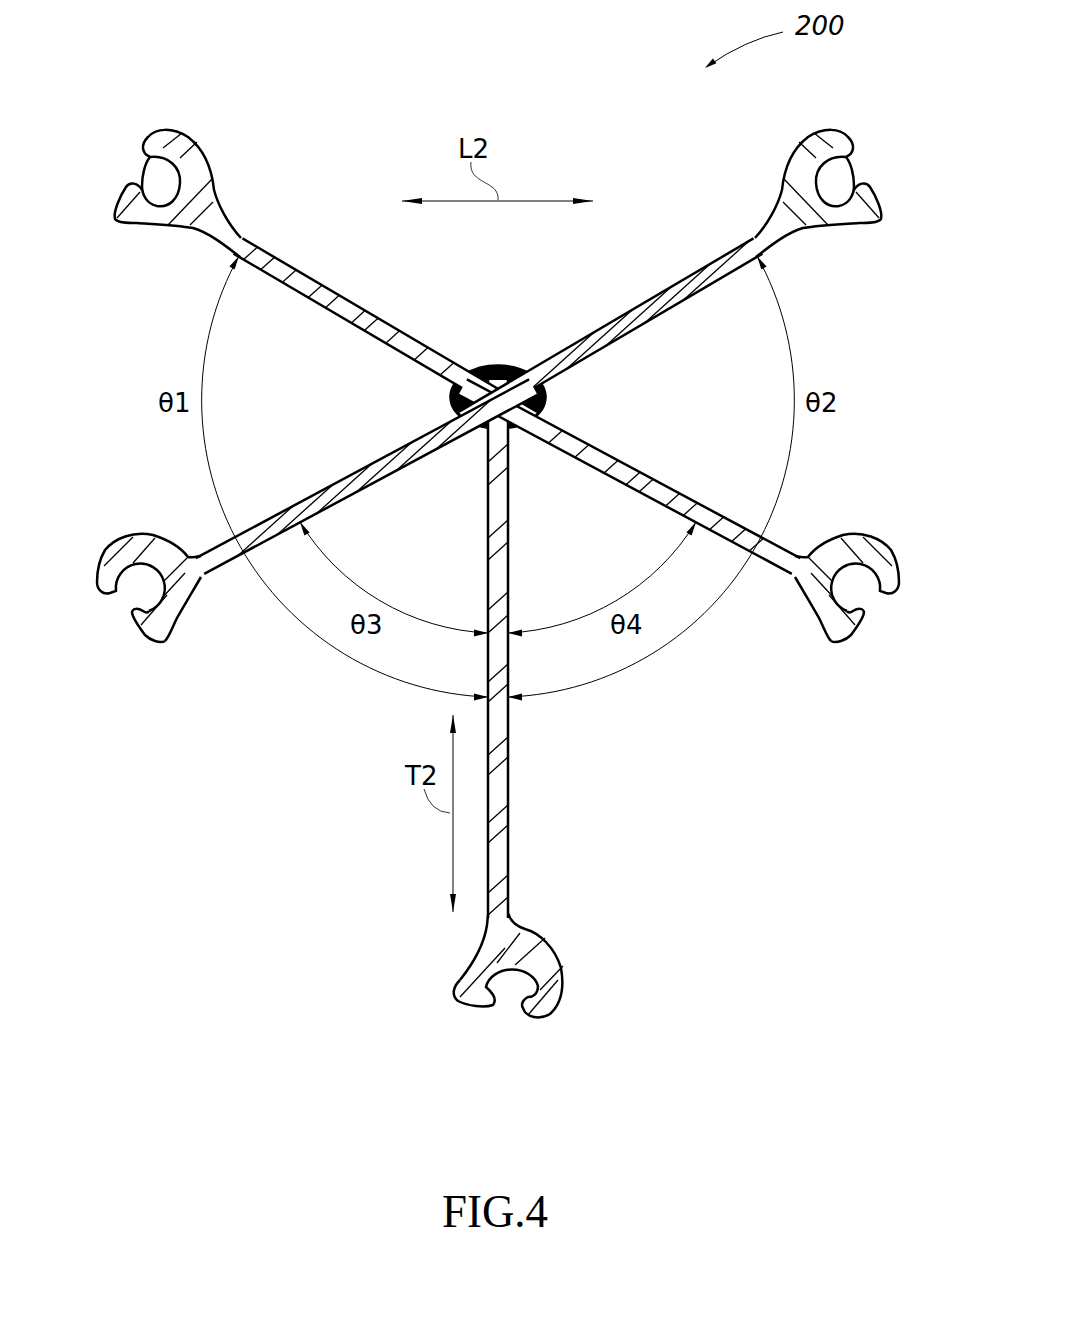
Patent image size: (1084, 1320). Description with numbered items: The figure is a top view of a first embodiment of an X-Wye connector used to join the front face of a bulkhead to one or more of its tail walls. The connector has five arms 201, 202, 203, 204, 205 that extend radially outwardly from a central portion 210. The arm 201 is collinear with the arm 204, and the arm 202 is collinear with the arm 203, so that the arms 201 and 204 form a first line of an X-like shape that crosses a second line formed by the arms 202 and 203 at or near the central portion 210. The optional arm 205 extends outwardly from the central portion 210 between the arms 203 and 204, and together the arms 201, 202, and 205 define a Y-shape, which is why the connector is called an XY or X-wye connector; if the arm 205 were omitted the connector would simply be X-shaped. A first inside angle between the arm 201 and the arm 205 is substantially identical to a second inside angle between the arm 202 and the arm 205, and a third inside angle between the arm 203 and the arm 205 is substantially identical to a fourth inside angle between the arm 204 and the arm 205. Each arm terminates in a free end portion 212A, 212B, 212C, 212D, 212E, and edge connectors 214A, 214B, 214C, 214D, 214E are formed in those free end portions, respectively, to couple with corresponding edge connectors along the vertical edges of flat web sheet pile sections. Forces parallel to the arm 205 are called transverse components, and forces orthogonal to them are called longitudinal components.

The arm 201 is at (420, 322).
The arm 202 is at (585, 322).
The arm 203 is at (345, 486).
The arm 204 is at (650, 486).
The arm 205 is at (510, 814).
The central portion 210 is at (500, 402).
The free end portion 212A is at (202, 228).
The free end portion 212B is at (795, 228).
The free end portion 212C is at (203, 560).
The free end portion 212D is at (793, 560).
The free end portion 212E is at (498, 922).
The edge connector 214A is at (180, 147).
The edge connector 214B is at (817, 150).
The edge connector 214C is at (115, 548).
The edge connector 214D is at (881, 548).
The edge connector 214E is at (550, 988).